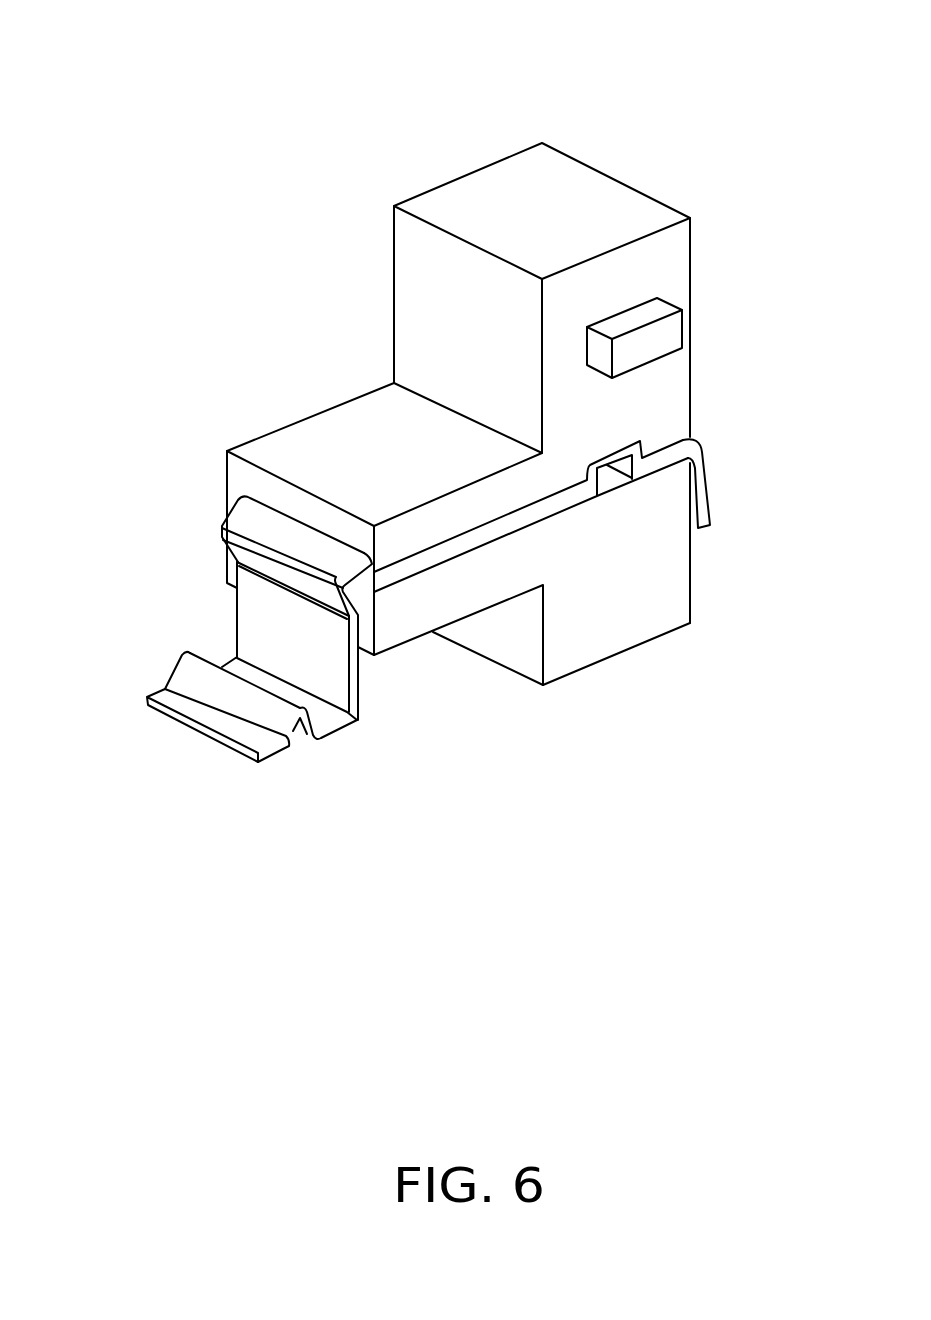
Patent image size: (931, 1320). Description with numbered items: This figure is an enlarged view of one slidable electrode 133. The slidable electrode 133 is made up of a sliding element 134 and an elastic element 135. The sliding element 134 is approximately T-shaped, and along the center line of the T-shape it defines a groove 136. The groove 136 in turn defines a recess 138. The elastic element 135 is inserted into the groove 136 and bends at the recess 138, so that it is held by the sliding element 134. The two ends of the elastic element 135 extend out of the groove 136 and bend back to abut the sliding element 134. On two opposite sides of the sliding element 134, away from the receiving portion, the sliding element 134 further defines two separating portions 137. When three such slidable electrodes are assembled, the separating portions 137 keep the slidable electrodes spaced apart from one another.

The slidable electrode 133 is at (183, 63).
The sliding element 134 is at (373, 432).
The elastic element 135 is at (273, 648).
The groove 136 is at (527, 514).
The separating portion 137 is at (664, 342).
The recess 138 is at (607, 462).